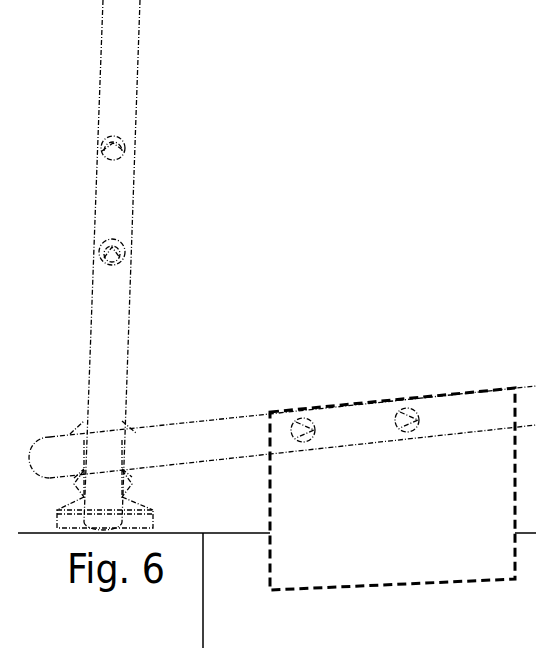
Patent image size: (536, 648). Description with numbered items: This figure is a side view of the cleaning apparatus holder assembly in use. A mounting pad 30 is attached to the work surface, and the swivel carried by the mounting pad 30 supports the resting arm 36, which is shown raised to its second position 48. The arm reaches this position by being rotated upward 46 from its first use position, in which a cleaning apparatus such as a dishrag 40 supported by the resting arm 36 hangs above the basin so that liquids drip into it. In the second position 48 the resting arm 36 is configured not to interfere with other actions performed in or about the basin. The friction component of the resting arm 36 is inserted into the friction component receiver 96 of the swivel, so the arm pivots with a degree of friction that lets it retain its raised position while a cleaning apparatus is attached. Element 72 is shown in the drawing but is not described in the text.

The mounting pad 30 is at (153, 520).
The resting arm 36 is at (135, 208).
The dishrag 40 is at (463, 392).
The upward rotation 46 is at (140, 361).
The second position 48 is at (140, 51).
The bracket 72 is at (80, 428).
The friction component receiver 96 is at (523, 194).